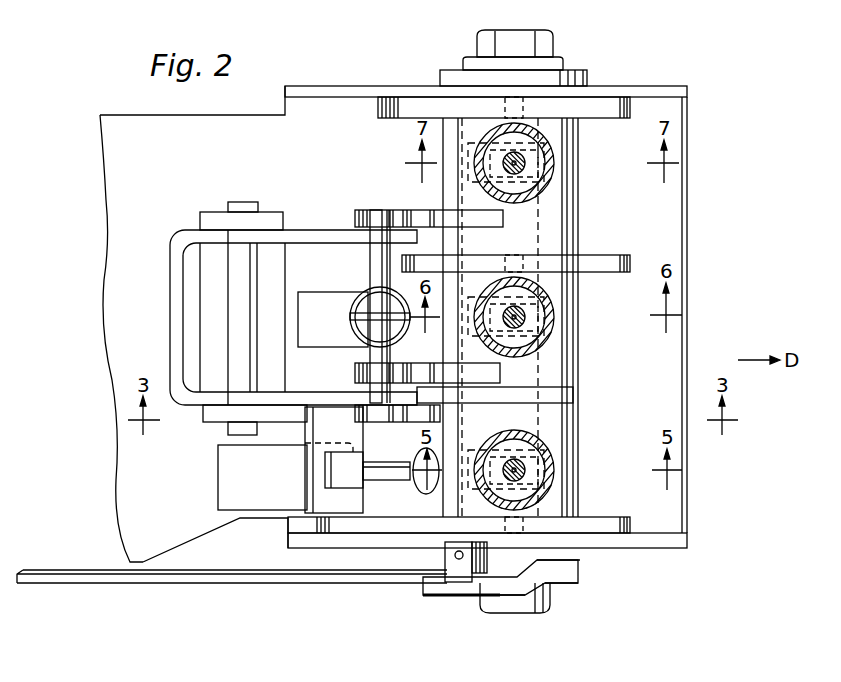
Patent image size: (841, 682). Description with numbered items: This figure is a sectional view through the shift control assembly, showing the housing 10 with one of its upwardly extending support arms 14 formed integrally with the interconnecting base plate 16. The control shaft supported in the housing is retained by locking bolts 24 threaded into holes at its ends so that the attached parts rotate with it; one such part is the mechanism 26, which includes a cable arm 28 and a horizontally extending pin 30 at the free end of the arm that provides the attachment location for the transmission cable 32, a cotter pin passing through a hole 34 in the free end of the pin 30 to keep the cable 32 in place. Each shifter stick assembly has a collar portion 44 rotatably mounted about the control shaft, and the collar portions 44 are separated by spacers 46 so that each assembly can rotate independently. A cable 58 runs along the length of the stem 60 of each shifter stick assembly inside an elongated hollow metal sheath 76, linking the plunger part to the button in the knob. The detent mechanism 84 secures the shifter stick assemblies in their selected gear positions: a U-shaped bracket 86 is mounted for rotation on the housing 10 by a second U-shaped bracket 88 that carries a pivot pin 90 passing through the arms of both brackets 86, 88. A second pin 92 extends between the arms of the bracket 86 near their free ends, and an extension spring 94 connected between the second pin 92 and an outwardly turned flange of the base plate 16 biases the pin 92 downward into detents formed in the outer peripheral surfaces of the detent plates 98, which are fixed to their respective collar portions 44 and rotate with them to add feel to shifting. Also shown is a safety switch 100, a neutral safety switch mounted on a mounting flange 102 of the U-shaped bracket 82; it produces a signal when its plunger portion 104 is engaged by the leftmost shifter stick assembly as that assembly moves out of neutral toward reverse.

The housing 10 is at (506, 315).
The support arms 14 is at (683, 86).
The base plate 16 is at (687, 288).
The locking bolts 24 is at (553, 40).
The mechanism 26 is at (437, 600).
The cable arm 28 is at (510, 585).
The pin 30 is at (435, 577).
The transmission cable 32 is at (391, 573).
The hole 34 is at (459, 562).
The collar portion 44 is at (565, 208).
The spacers 46 is at (575, 242).
The cable 58 is at (528, 168).
The stem 60 is at (552, 176).
The sheath 76 is at (522, 160).
The U-shaped bracket 82 is at (427, 100).
The detent mechanism 84 is at (160, 220).
The U-shaped bracket 86 is at (297, 230).
The second U-shaped bracket 88 is at (232, 203).
The pivot pin 90 is at (248, 205).
The second pin 92 is at (369, 262).
The extension spring 94 is at (360, 340).
The detent plates 98 is at (364, 211).
The safety switch 100 is at (258, 512).
The mounting flange 102 is at (317, 508).
The plunger portion 104 is at (397, 470).